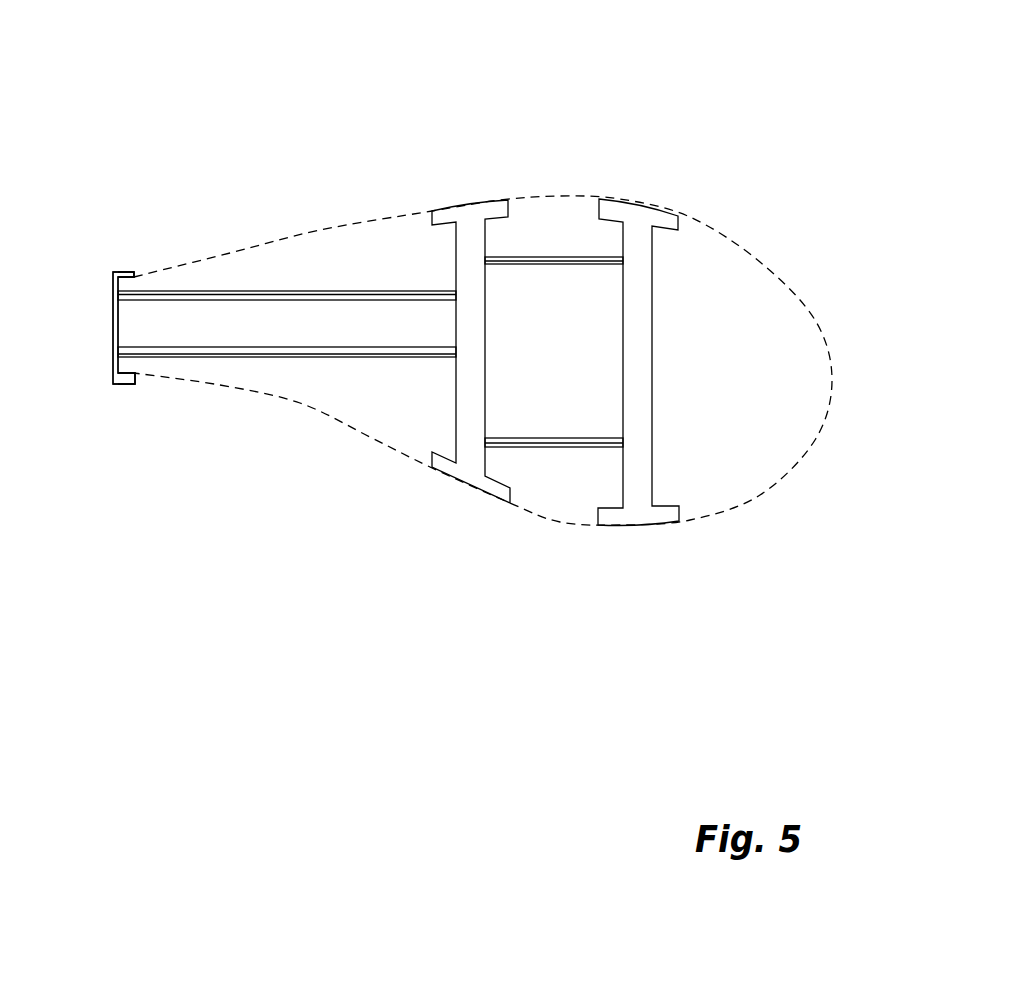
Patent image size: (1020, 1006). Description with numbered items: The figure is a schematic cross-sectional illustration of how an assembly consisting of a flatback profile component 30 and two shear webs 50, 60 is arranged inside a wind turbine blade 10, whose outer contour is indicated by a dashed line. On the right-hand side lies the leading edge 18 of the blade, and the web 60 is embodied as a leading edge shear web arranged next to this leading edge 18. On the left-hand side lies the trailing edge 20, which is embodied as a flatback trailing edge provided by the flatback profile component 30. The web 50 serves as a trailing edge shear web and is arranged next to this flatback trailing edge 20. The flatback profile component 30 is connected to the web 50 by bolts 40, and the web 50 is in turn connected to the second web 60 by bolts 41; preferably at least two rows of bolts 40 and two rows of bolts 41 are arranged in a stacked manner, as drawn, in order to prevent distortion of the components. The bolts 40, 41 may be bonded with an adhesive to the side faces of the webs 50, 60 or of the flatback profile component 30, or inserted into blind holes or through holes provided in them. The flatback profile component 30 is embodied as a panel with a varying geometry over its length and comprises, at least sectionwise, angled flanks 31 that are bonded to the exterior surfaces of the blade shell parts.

The wind turbine blade 10 is at (420, 633).
The leading edge 18 is at (832, 392).
The trailing edge 20 is at (102, 338).
The flatback profile component 30 is at (113, 310).
The angled flanks 31 is at (132, 272).
The bolts 40 is at (285, 291).
The bolts 41 is at (543, 256).
The trailing edge shear web 50 is at (467, 235).
The leading edge shear web 60 is at (635, 248).